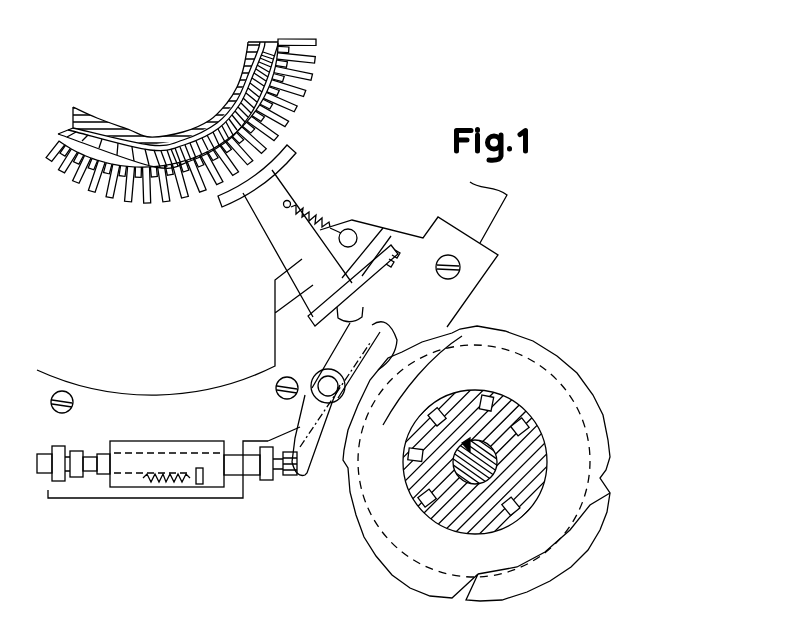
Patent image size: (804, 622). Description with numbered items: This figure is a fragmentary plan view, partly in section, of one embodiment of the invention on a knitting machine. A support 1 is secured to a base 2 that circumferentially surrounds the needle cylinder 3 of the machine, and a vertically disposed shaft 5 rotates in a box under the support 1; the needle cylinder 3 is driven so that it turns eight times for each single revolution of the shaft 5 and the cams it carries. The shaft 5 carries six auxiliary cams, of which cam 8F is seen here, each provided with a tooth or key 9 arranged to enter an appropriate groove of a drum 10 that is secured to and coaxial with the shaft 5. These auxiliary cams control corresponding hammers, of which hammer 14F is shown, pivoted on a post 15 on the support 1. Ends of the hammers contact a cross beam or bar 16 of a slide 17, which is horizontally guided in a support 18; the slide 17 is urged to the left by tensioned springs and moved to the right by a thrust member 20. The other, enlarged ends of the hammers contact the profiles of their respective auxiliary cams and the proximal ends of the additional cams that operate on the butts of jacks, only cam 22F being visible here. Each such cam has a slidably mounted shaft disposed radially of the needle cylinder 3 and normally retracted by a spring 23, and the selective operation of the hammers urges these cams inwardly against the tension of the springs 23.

The support 1 is at (166, 392).
The base 2 is at (496, 212).
The needle cylinder 3 is at (70, 120).
The shaft 5 is at (487, 462).
The cam 8F is at (410, 572).
The tooth or key 9 is at (440, 412).
The drum 10 is at (533, 505).
The hammer 14F is at (330, 455).
The post 15 is at (317, 376).
The cross beam or bar 16 is at (267, 478).
The slide 17 is at (246, 482).
The support 18 is at (141, 443).
The thrust member 20 is at (40, 472).
The cam 22F is at (278, 246).
The spring 23 is at (322, 218).